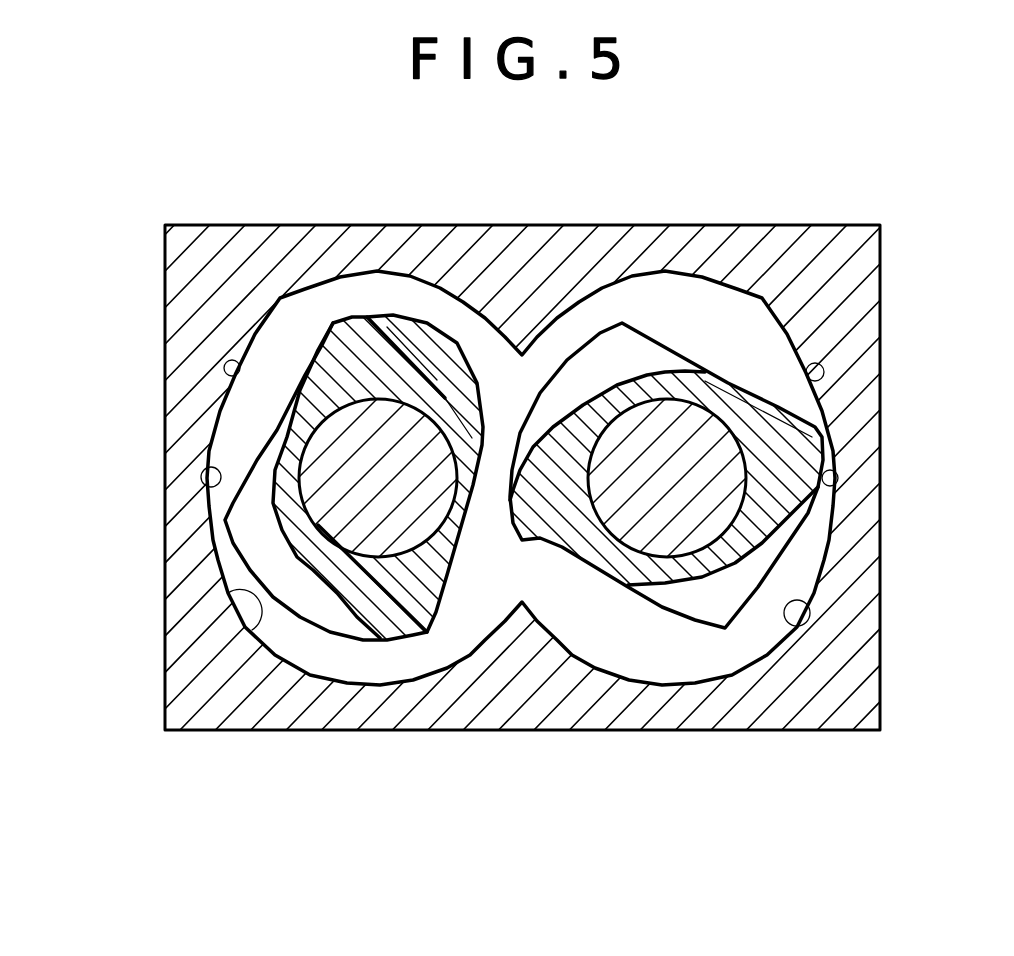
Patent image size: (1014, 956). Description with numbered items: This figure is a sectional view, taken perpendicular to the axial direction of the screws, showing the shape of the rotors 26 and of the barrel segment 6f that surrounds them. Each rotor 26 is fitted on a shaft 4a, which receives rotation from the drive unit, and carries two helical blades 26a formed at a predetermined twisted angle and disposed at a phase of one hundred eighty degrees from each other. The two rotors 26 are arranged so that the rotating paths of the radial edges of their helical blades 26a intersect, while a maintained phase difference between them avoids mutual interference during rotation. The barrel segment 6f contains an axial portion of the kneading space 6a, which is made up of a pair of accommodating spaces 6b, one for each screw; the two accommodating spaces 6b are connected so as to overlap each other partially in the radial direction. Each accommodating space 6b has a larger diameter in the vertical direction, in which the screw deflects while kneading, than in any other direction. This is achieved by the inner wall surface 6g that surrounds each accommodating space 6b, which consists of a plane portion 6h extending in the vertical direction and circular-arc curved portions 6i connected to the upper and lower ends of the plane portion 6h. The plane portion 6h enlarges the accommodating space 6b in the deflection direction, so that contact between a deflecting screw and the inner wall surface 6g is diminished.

The barrel segment 6f is at (541, 225).
The shaft 4a is at (333, 410).
The rotor 26 is at (440, 330).
The helical blade 26a is at (363, 316).
The kneading space 6a is at (521, 563).
The accommodating space 6b is at (605, 800).
The inner wall surface 6g is at (517, 495).
The plane portion 6h is at (200, 474).
The circular-arc curved portion 6i is at (226, 375).